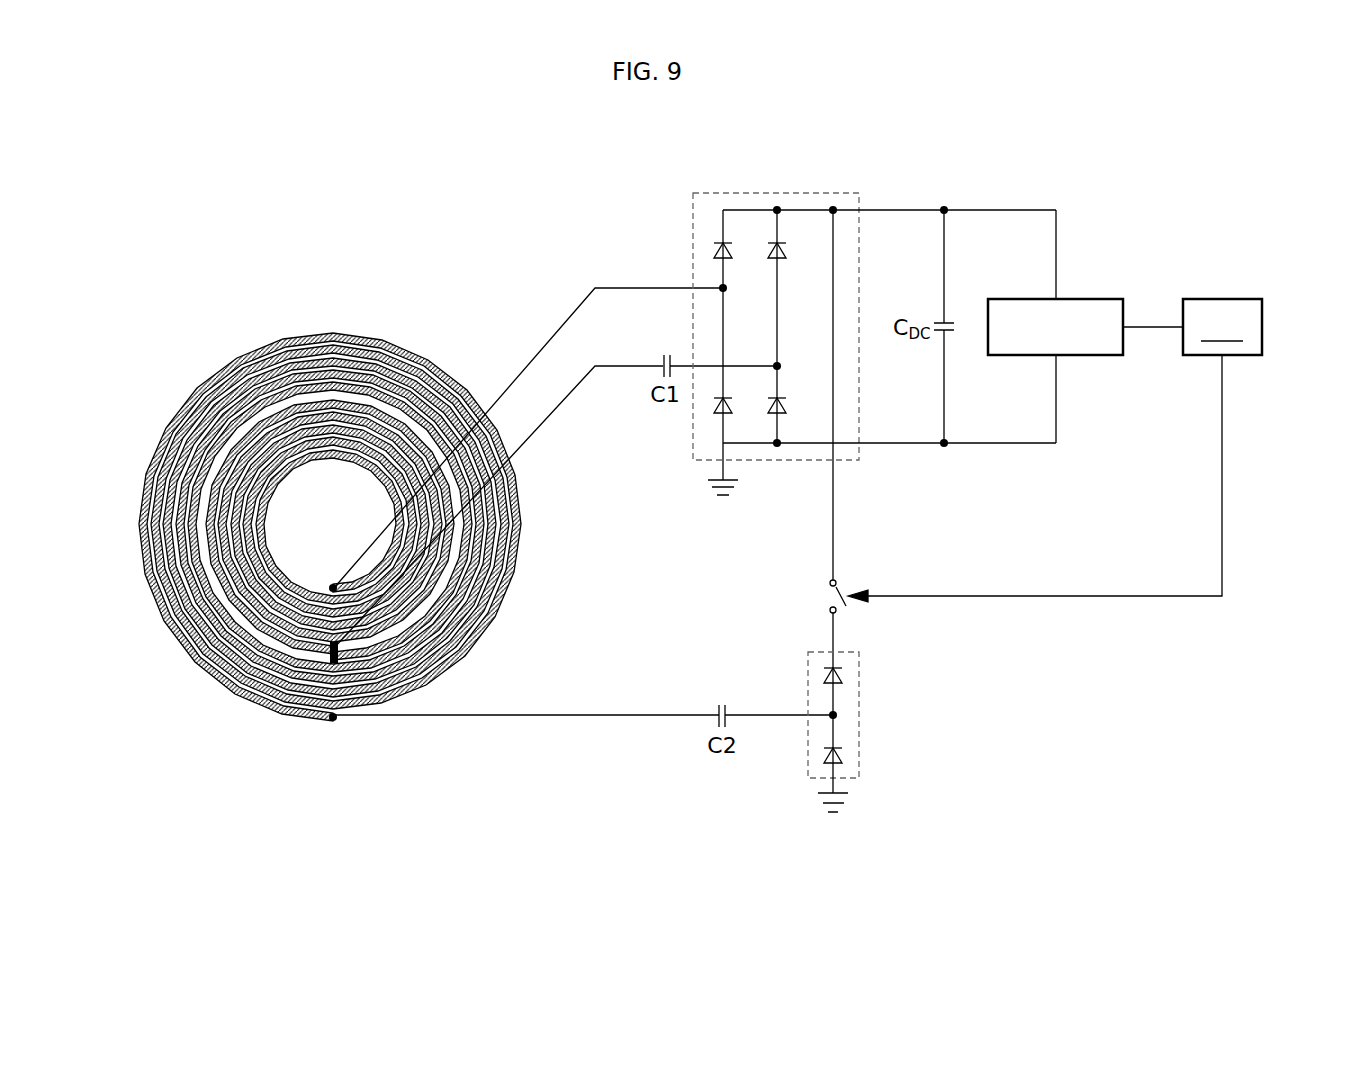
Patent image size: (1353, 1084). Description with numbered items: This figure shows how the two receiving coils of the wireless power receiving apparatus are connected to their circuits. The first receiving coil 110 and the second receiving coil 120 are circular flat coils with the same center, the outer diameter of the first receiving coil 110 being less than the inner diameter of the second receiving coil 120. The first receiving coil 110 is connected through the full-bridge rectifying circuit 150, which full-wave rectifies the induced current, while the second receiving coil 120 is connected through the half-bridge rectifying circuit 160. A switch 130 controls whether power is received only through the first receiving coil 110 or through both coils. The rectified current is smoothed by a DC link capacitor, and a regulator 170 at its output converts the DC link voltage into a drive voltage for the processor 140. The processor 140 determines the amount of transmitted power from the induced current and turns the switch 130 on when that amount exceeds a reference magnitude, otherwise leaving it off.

The first receiving coil 110 is at (335, 400).
The second receiving coil 120 is at (282, 333).
The switch 130 is at (843, 587).
The processor 140 is at (1055, 450).
The full-bridge rectifying circuit 150 is at (845, 193).
The half-bridge rectifying circuit 160 is at (859, 715).
The regulator 170 is at (1095, 299).